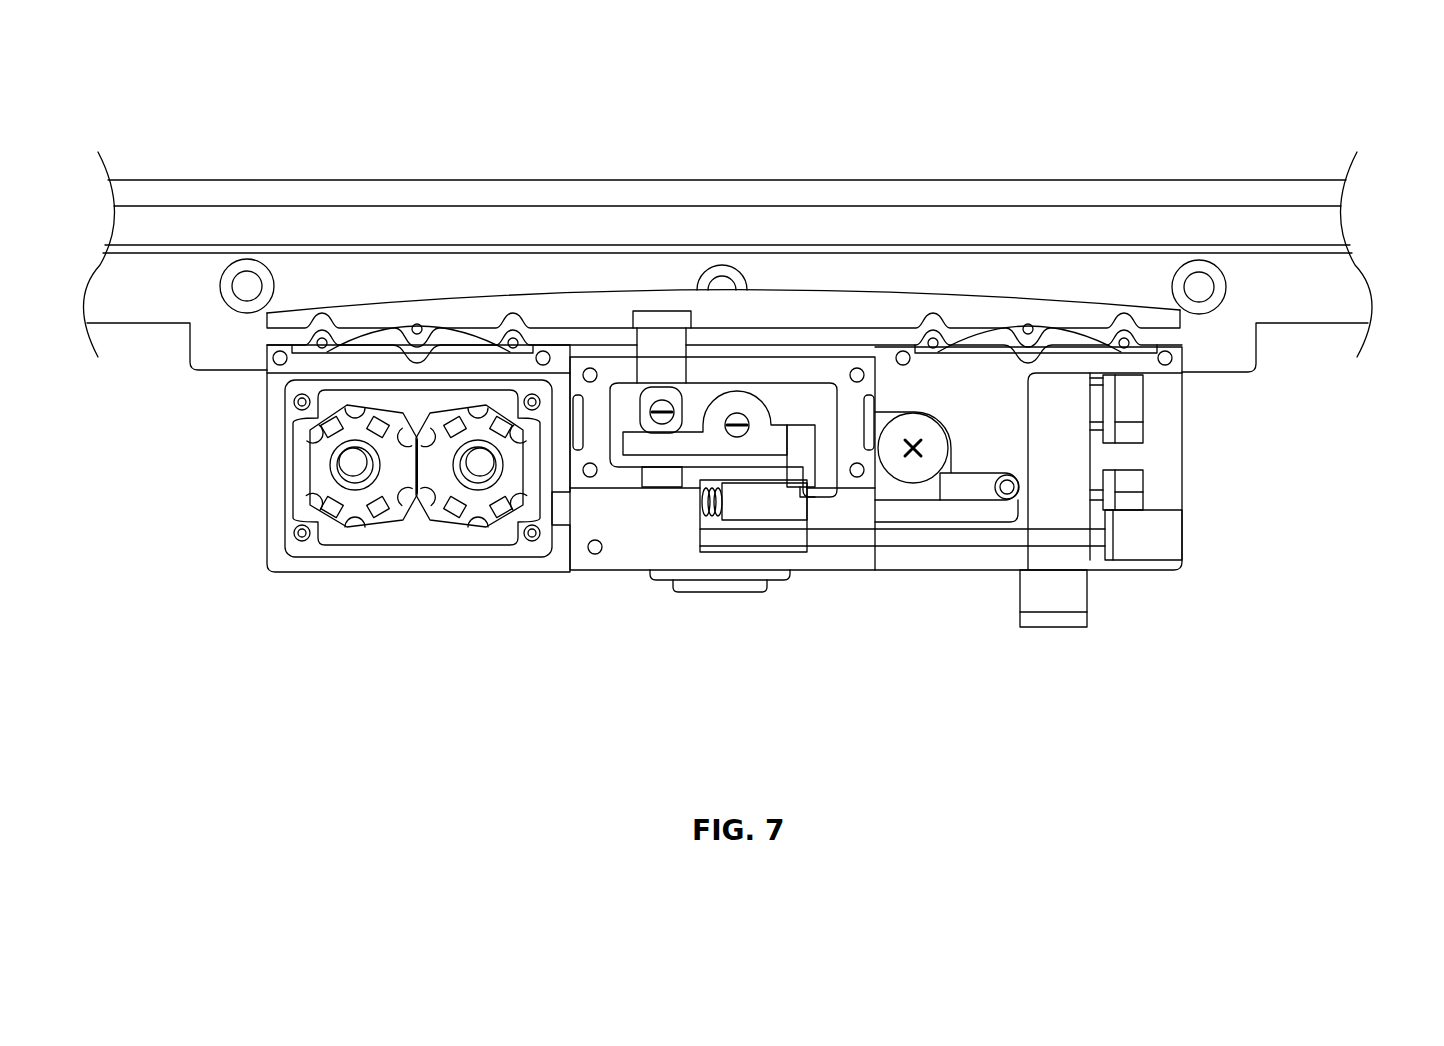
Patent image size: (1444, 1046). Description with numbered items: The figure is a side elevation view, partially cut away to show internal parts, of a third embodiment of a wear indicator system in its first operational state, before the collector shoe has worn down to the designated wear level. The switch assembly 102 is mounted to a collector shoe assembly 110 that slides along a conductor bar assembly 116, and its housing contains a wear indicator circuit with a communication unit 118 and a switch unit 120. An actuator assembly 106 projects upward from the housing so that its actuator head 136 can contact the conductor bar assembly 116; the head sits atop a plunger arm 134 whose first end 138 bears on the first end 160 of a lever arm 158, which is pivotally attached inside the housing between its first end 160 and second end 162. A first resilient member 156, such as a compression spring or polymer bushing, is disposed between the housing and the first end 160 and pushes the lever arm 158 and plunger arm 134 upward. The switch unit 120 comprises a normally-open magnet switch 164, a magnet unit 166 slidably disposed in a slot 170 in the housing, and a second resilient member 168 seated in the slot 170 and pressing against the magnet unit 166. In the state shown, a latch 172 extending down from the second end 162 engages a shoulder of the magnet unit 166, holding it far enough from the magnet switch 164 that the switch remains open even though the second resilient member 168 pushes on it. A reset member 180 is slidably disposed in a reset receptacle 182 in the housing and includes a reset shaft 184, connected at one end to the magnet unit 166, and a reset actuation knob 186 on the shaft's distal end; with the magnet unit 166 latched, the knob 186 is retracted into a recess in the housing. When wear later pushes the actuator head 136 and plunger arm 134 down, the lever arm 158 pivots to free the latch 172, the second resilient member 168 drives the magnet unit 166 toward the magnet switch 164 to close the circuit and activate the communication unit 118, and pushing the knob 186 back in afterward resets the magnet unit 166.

The switch assembly 102 is at (362, 663).
The actuator assembly 106 is at (557, 610).
The collector shoe assembly 110 is at (1348, 297).
The conductor bar assembly 116 is at (1328, 227).
The communication unit 118 is at (300, 497).
The switch unit 120 is at (873, 632).
The plunger arm 134 is at (660, 332).
The actuator head 136 is at (477, 313).
The first end of the plunger arm 138 is at (645, 425).
The first resilient member 156 is at (658, 487).
The lever arm 158 is at (737, 408).
The first end of the lever arm 160 is at (632, 443).
The second end of the lever arm 162 is at (812, 470).
The magnet switch 164 is at (928, 490).
The magnet unit 166 is at (768, 506).
The second resilient member 168 is at (717, 513).
The slot 170 is at (818, 530).
The latch 172 is at (805, 490).
The reset member 180 is at (1143, 634).
The reset receptacle 182 is at (1007, 548).
The reset shaft 184 is at (1075, 533).
The reset actuation knob 186 is at (1153, 543).